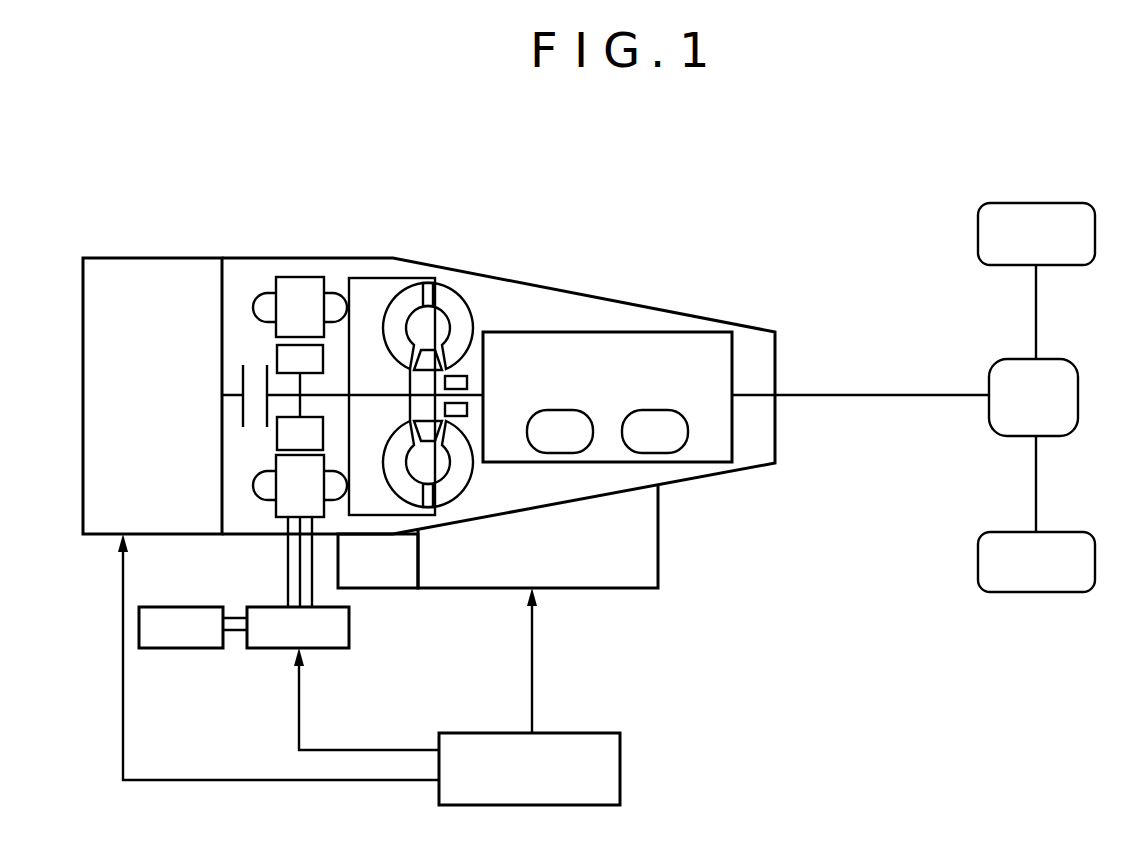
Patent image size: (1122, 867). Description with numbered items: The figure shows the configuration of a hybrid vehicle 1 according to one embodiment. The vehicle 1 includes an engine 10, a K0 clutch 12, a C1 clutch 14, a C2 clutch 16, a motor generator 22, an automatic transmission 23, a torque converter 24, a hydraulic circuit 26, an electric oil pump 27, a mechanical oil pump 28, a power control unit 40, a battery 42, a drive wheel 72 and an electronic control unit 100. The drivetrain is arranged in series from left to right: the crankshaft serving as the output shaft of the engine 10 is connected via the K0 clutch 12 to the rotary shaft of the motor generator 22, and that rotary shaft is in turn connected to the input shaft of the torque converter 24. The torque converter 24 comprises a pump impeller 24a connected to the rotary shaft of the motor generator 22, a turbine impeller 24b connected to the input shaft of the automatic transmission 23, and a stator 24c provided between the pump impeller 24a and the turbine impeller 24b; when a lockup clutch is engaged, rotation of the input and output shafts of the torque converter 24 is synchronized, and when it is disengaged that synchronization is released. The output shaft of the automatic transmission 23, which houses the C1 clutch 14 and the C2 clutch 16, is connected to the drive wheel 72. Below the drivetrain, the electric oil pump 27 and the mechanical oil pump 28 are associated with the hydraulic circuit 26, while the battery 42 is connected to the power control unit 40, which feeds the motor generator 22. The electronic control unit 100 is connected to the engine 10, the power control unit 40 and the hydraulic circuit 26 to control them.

The vehicle 1 is at (708, 226).
The engine 10 is at (153, 258).
The K0 clutch 12 is at (255, 375).
The C1 clutch 14 is at (562, 410).
The C2 clutch 16 is at (655, 410).
The motor generator 22 is at (299, 256).
The automatic transmission 23 is at (606, 332).
The torque converter 24 is at (478, 297).
The pump impeller 24a is at (450, 305).
The turbine impeller 24b is at (412, 303).
The stator 24c is at (411, 364).
The hydraulic circuit 26 is at (565, 588).
The electric oil pump 27 is at (388, 588).
The mechanical oil pump 28 is at (471, 416).
The power control unit 40 is at (265, 648).
The battery 42 is at (181, 648).
The drive wheel 72 is at (1037, 203).
The electronic control unit 100 is at (574, 733).